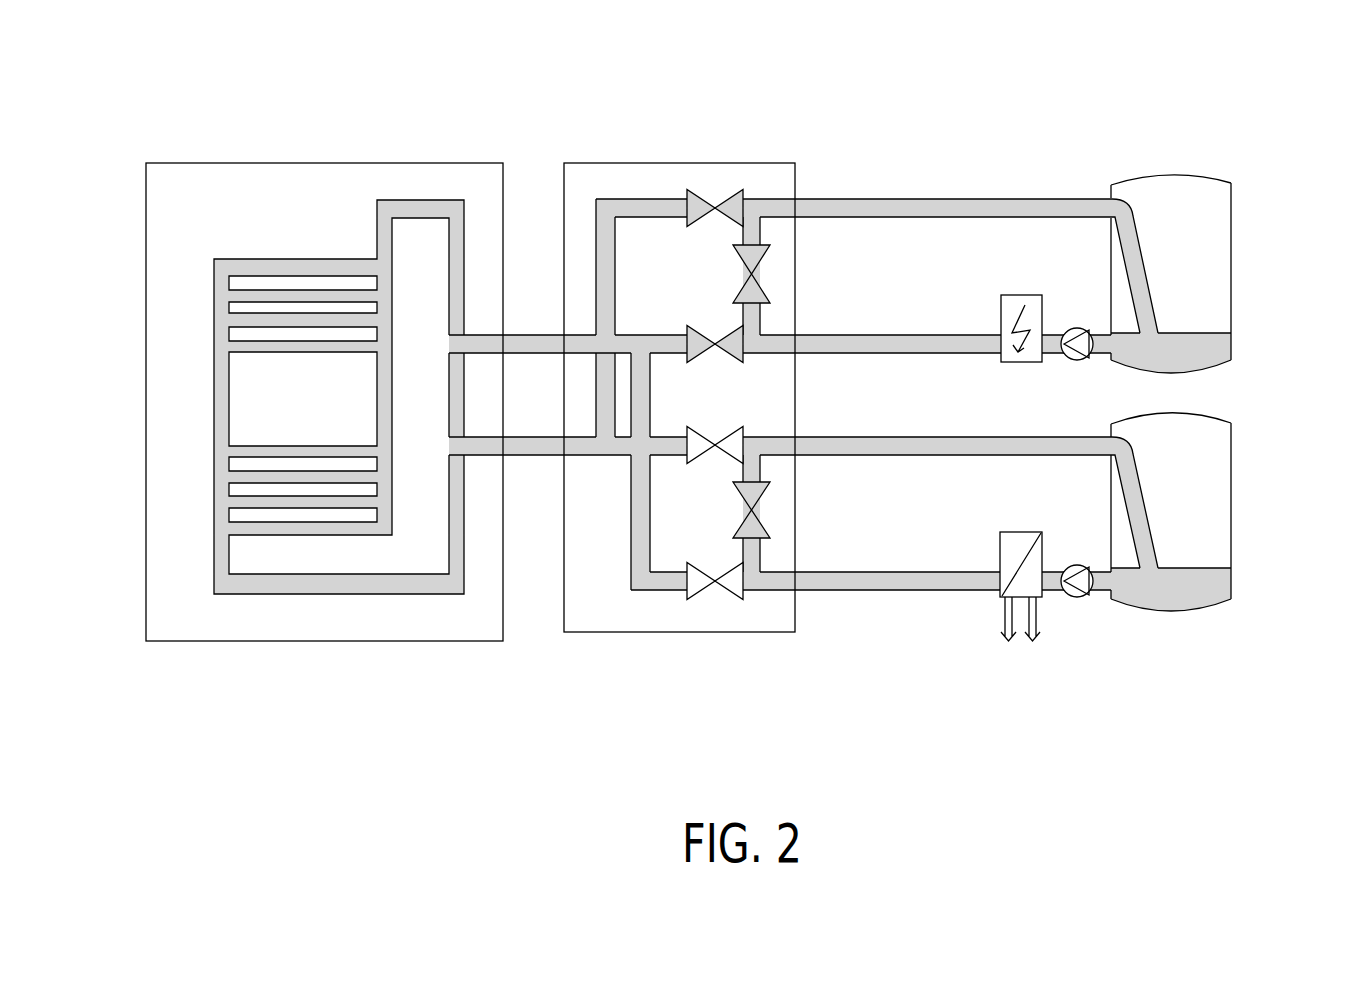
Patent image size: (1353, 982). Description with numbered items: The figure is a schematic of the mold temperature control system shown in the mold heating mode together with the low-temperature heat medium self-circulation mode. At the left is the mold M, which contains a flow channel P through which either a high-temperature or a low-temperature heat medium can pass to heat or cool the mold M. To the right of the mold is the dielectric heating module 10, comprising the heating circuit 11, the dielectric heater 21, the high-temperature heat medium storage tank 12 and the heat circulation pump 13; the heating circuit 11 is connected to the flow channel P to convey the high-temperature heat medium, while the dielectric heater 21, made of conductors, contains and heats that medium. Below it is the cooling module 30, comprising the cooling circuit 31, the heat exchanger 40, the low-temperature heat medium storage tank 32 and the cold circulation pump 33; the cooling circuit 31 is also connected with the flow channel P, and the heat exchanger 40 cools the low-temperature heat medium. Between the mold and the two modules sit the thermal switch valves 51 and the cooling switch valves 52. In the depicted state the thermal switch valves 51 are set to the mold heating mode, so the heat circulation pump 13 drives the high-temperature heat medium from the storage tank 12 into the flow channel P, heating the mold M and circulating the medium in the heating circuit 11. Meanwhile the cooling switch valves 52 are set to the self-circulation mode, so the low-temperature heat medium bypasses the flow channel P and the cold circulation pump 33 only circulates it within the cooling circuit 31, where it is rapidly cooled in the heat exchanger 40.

The dielectric heating module 10 is at (1178, 105).
The heating circuit 11 is at (908, 199).
The high-temperature heat medium storage tank 12 is at (1231, 250).
The heat circulation pump 13 is at (1080, 362).
The dielectric heater 21 is at (1015, 295).
The cooling module 30 is at (1208, 633).
The cooling circuit 31 is at (868, 593).
The low-temperature heat medium storage tank 32 is at (1231, 500).
The cold circulation pump 33 is at (1080, 597).
The heat exchanger 40 is at (1010, 531).
The thermal switch valves 51 is at (773, 164).
The cooling switch valves 52 is at (747, 610).
The mold M is at (180, 167).
The flow channel P is at (301, 259).